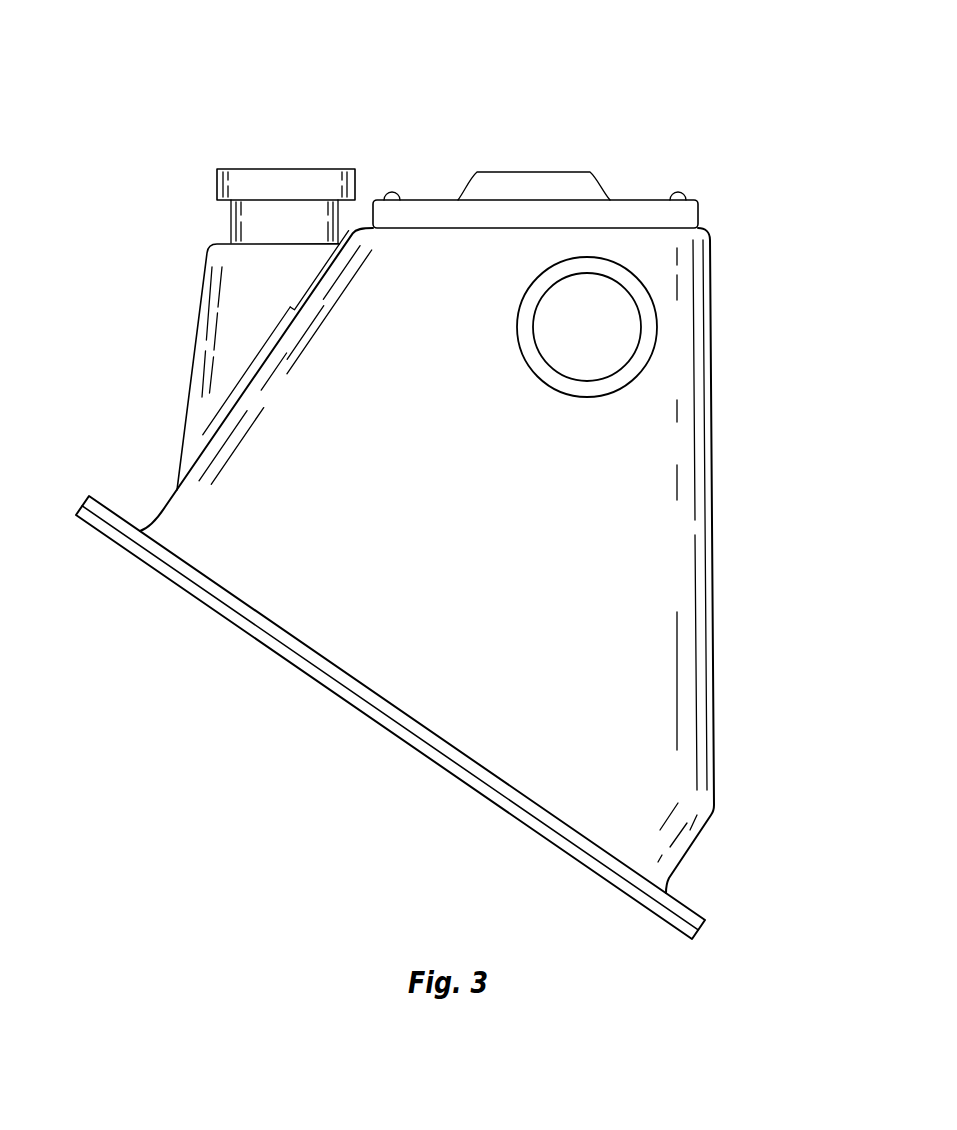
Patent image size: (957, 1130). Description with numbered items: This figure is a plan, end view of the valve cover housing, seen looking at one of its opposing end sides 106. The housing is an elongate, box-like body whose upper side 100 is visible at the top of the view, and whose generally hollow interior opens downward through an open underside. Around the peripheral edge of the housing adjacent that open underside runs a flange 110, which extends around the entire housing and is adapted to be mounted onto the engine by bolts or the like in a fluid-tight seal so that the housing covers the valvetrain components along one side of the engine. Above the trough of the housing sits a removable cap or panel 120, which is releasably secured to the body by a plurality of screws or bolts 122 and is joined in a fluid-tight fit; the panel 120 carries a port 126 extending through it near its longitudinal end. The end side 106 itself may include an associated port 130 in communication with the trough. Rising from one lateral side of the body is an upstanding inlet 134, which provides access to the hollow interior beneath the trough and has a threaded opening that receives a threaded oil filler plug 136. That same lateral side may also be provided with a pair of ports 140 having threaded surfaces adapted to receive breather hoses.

The upper side 100 is at (458, 149).
The end side 106 is at (336, 531).
The flange 110 is at (103, 505).
The panel 120 is at (437, 200).
The screws or bolts 122 is at (391, 195).
The port 126 is at (548, 171).
The port 130 is at (623, 335).
The inlet 134 is at (203, 308).
The oil filler plug 136 is at (250, 169).
The ports 140 is at (361, 226).